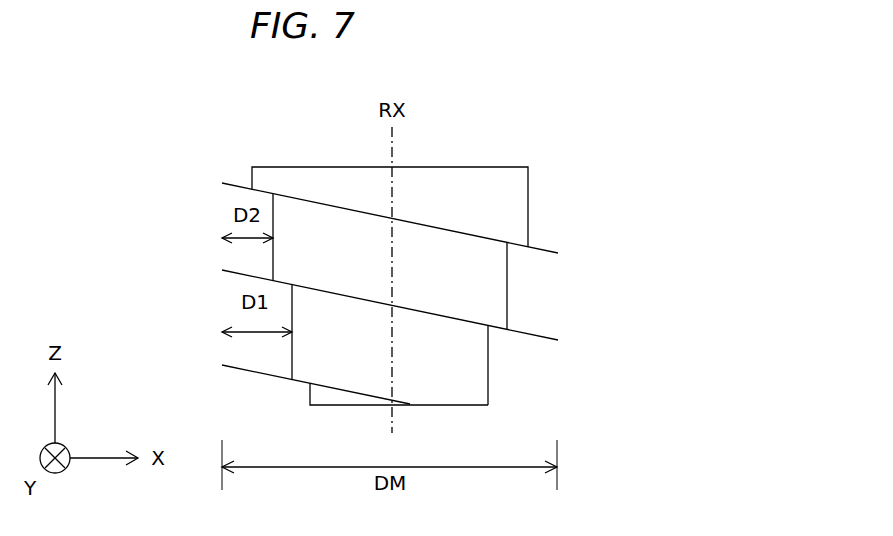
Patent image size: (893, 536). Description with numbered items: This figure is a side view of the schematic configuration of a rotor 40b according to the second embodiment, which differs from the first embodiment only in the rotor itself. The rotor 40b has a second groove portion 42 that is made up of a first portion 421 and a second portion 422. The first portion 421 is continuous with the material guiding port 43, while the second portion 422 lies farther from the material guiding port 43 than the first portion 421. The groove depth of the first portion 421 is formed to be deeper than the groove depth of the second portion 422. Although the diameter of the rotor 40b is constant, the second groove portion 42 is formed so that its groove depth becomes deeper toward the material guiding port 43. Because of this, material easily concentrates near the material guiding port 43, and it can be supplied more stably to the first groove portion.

The rotor 40b is at (528, 122).
The second groove portion 42 is at (258, 108).
The first portion 421 is at (333, 317).
The second portion 422 is at (310, 238).
The material guiding port 43 is at (383, 410).